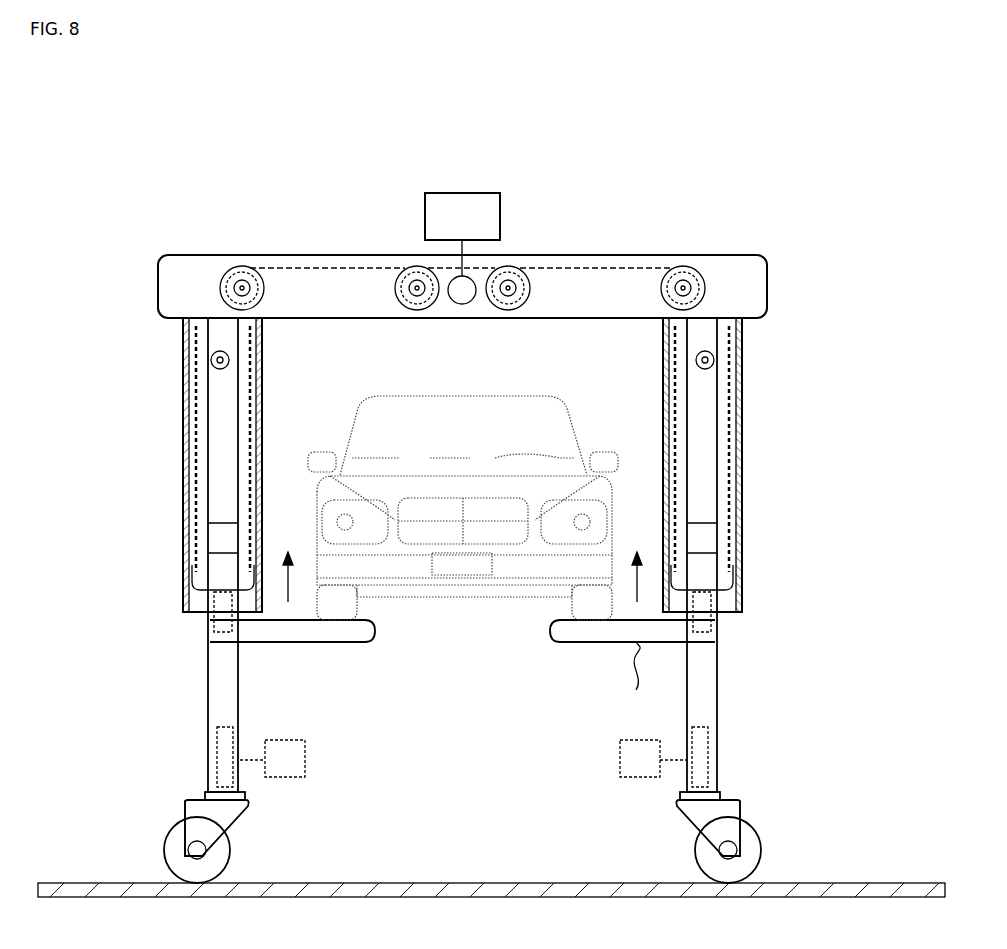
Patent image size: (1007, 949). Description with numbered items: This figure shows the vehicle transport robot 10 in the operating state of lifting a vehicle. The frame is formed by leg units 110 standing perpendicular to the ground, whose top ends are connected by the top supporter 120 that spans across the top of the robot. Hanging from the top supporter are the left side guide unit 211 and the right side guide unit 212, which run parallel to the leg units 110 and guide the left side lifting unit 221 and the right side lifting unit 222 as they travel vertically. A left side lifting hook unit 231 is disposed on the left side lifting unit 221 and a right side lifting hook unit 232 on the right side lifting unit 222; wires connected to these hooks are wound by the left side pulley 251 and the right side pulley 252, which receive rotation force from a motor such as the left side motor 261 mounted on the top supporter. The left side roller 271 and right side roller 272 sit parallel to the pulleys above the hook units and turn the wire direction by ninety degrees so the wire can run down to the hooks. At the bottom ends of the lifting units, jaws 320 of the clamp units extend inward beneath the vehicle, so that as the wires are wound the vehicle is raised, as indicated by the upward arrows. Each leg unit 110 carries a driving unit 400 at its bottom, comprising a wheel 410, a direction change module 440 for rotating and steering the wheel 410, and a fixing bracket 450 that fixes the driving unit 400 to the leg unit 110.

The vehicle transport robot 10 is at (133, 129).
The leg unit 110 is at (208, 655).
The top supporter 120 is at (755, 286).
The left side guide unit 211 is at (183, 433).
The right side guide unit 212 is at (742, 433).
The left side lifting unit 221 is at (183, 483).
The right side lifting unit 222 is at (742, 483).
The left side lifting hook unit 231 is at (220, 360).
The right side lifting hook unit 232 is at (705, 360).
The left side pulley 251 is at (408, 268).
The right side pulley 252 is at (522, 262).
The left side motor 261 is at (462, 193).
The left side roller 271 is at (222, 266).
The right side roller 272 is at (702, 267).
The jaw 320 is at (293, 642).
The driving unit 400 is at (758, 804).
The wheel 410 is at (170, 840).
The direction change module 440 is at (215, 742).
The fixing bracket 450 is at (200, 810).